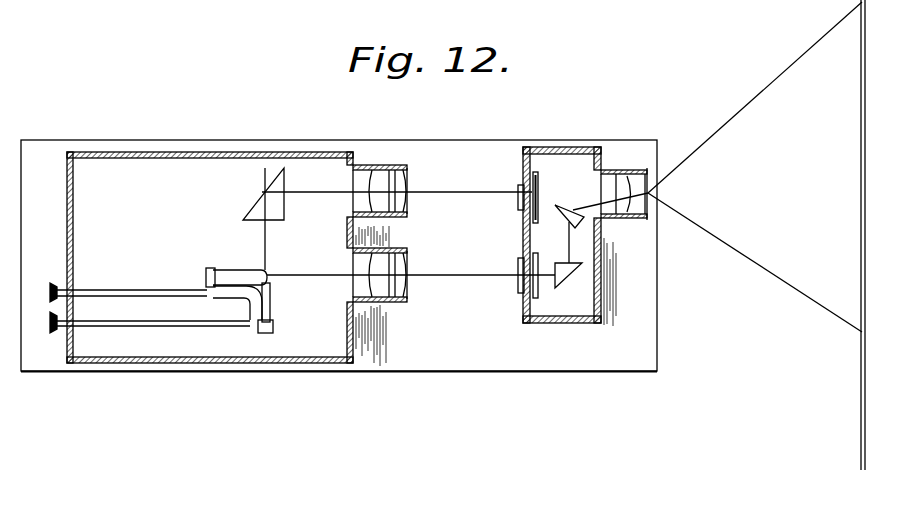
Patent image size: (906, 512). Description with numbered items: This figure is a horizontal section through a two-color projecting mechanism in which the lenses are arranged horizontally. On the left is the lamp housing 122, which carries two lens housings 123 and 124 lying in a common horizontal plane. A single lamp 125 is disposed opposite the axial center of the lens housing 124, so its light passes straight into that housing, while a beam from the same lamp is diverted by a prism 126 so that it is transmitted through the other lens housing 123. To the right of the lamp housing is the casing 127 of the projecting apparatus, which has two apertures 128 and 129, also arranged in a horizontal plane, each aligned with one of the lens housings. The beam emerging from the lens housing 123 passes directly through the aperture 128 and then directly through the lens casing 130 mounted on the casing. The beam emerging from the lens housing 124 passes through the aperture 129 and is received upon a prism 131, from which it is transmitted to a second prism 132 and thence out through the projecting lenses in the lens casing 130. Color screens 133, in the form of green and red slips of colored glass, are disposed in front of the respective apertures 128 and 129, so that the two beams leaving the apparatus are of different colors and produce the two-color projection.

The lamp housing 122 is at (198, 155).
The lens housing 123 is at (374, 165).
The lens housing 124 is at (397, 249).
The lamp 125 is at (233, 302).
The prism 126 is at (243, 220).
The casing 127 is at (562, 219).
The aperture 128 is at (533, 206).
The aperture 129 is at (527, 258).
The lens casing 130 is at (622, 170).
The prism 131 is at (570, 283).
The prism 132 is at (572, 190).
The color screens 133 is at (525, 181).